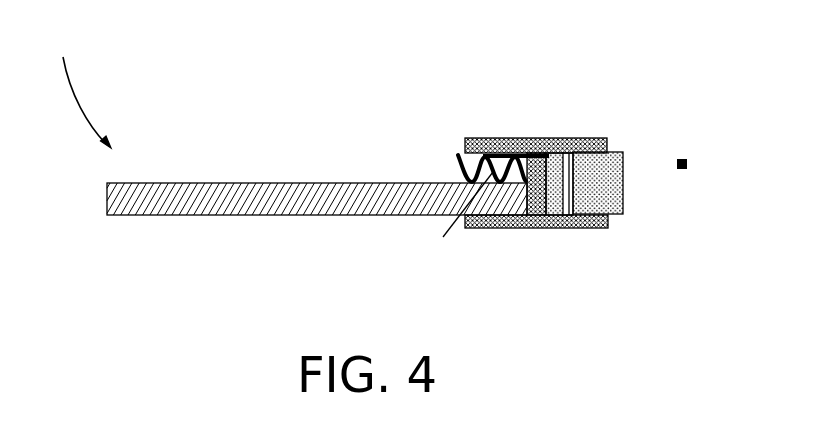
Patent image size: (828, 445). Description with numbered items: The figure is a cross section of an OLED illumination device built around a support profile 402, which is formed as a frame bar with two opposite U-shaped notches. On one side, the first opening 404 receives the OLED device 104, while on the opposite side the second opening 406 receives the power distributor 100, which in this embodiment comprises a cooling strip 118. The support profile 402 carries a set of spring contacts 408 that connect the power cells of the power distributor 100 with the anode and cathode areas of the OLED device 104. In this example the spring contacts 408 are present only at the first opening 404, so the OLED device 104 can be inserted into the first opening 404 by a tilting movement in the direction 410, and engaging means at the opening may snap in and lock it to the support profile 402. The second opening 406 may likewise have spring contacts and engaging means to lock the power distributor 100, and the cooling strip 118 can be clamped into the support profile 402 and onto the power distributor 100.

The direction 410 is at (77, 105).
The OLED device 104 is at (255, 191).
The support profile 402 is at (543, 138).
The second opening 406 is at (607, 222).
The power distributor 100 is at (557, 207).
The cooling strip 118 is at (614, 188).
The first opening 404 is at (458, 152).
The spring contacts 408 is at (457, 218).